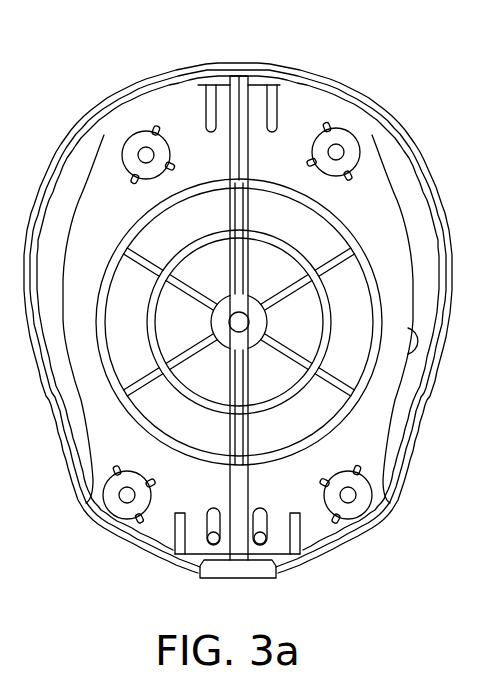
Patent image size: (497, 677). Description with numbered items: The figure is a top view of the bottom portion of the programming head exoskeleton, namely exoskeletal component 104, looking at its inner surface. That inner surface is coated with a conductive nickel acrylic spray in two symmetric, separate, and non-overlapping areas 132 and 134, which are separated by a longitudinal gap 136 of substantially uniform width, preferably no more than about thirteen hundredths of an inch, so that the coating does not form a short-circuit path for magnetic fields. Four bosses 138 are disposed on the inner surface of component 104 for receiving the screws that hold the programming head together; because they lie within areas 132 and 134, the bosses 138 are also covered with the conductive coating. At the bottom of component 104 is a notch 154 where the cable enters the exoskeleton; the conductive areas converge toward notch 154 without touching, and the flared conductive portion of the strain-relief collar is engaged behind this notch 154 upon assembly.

The exoskeletal component 104 is at (58, 152).
The conductive coated area 132 is at (107, 422).
The conductive coated area 134 is at (395, 443).
The longitudinal gap 136 is at (242, 62).
The boss 138 is at (144, 150).
The notch 154 is at (265, 588).